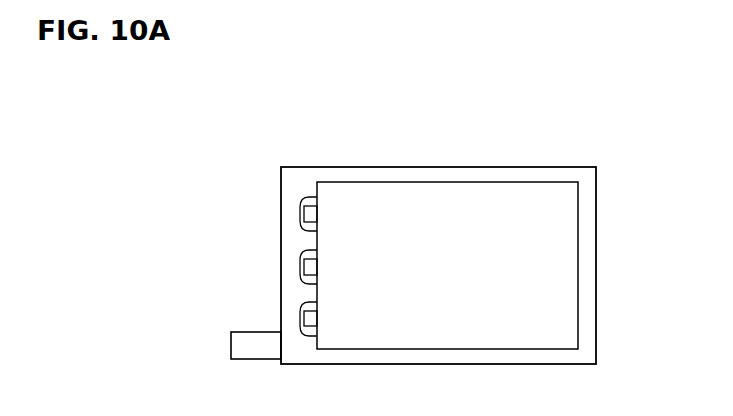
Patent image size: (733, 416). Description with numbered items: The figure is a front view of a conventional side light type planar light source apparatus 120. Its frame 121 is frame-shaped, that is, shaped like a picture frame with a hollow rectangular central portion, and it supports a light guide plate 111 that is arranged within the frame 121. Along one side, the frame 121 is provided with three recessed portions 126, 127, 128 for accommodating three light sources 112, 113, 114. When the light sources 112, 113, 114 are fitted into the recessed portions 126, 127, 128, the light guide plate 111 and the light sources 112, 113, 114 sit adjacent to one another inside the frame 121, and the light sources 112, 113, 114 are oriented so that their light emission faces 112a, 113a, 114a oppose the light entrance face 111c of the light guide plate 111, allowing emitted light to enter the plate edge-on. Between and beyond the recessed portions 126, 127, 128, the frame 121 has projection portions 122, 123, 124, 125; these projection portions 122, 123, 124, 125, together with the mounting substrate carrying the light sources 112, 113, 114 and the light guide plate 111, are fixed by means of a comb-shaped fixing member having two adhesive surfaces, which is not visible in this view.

The planar light source apparatus 120 is at (297, 130).
The frame 121 is at (516, 173).
The light guide plate 111 is at (578, 287).
The light entrance face 111c is at (299, 203).
The light source 112 is at (304, 213).
The light source 113 is at (305, 266).
The light source 114 is at (305, 318).
The light emission face 112a is at (320, 213).
The light emission face 113a is at (320, 266).
The light emission face 114a is at (320, 318).
The projection portion 122 is at (312, 198).
The projection portion 123 is at (315, 239).
The projection portion 124 is at (315, 293).
The projection portion 125 is at (317, 345).
The recessed portion 126 is at (300, 206).
The recessed portion 127 is at (302, 254).
The recessed portion 128 is at (302, 306).